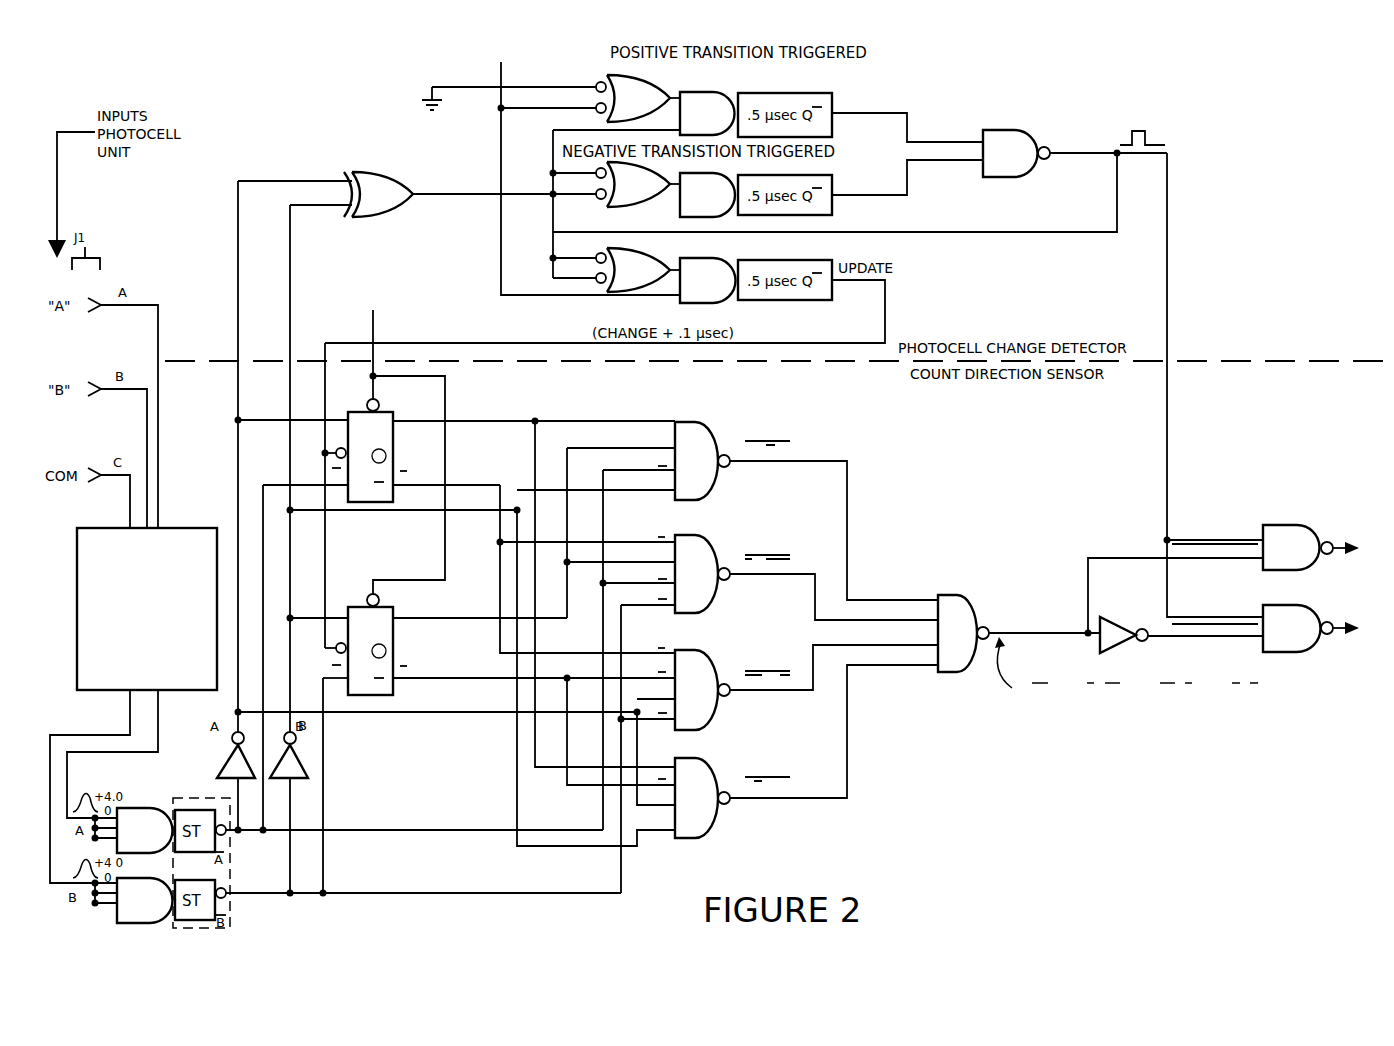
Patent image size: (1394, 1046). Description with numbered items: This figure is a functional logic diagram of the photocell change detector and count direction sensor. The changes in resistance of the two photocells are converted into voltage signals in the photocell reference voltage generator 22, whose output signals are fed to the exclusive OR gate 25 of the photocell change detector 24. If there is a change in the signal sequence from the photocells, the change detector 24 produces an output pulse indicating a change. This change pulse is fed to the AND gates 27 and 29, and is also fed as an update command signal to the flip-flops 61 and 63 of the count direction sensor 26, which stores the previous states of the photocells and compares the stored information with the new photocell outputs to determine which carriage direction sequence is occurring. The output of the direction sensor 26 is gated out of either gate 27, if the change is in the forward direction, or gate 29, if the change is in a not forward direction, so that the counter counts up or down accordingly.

The reference voltage generator 22 is at (176, 527).
The photocell change detector 24 is at (910, 117).
The exclusive OR gate 25 is at (370, 173).
The count direction sensor 26 is at (852, 511).
The AND gate 27 is at (1297, 522).
The AND gate 29 is at (1328, 655).
The flip-flop 61 is at (398, 456).
The flip-flop 63 is at (398, 652).